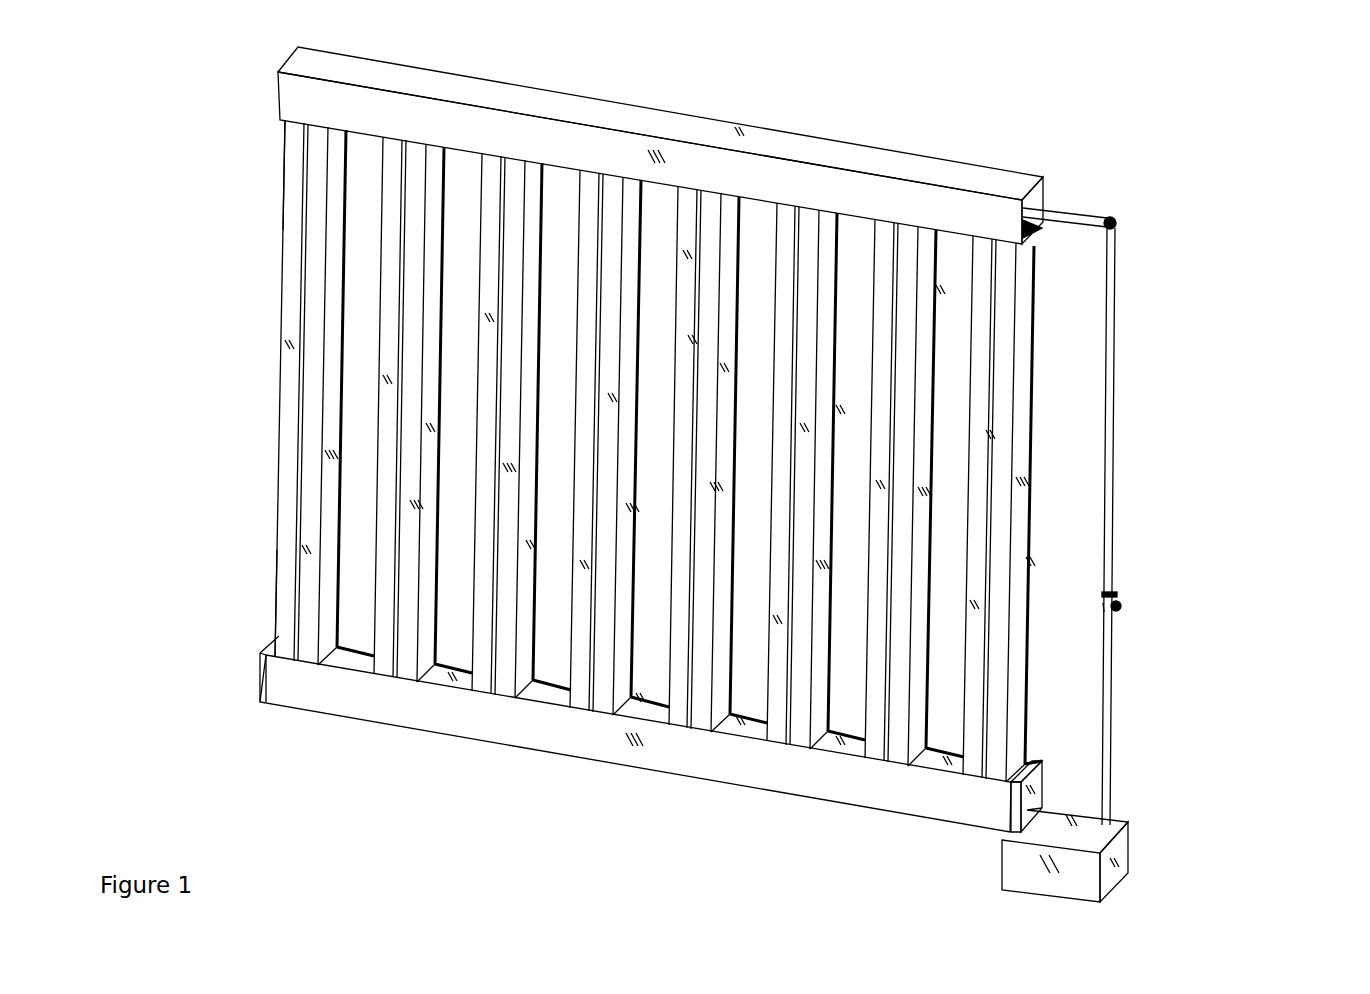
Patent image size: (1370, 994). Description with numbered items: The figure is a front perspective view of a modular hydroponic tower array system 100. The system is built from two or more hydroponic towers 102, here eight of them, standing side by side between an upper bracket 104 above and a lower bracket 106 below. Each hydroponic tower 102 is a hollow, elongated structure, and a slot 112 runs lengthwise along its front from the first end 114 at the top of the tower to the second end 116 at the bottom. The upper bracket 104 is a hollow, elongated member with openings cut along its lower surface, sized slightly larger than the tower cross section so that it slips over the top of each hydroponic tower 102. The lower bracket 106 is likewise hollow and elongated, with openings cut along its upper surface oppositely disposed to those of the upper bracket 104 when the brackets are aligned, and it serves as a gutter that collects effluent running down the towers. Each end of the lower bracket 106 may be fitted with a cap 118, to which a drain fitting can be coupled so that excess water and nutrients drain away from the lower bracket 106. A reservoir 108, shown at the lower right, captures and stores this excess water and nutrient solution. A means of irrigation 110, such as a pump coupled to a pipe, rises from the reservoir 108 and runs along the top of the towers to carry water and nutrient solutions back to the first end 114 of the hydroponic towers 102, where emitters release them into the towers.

The modular hydroponic tower array system 100 is at (1108, 136).
The hydroponic tower 102 is at (283, 437).
The upper bracket 104 is at (813, 152).
The lower bracket 106 is at (317, 693).
The reservoir 108 is at (1135, 848).
The means of irrigation 110 is at (1113, 535).
The slot 112 is at (300, 240).
The first end 114 is at (268, 131).
The second end 116 is at (256, 634).
The cap 118 is at (1040, 775).